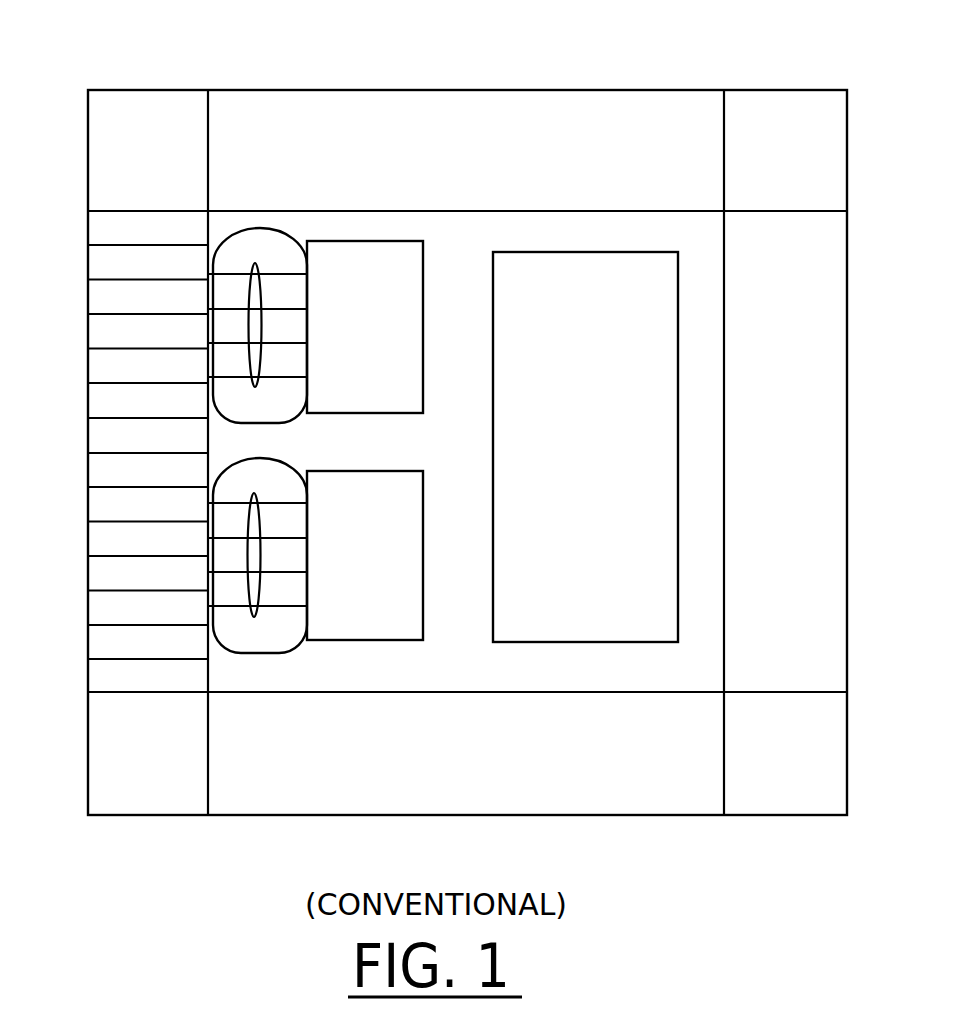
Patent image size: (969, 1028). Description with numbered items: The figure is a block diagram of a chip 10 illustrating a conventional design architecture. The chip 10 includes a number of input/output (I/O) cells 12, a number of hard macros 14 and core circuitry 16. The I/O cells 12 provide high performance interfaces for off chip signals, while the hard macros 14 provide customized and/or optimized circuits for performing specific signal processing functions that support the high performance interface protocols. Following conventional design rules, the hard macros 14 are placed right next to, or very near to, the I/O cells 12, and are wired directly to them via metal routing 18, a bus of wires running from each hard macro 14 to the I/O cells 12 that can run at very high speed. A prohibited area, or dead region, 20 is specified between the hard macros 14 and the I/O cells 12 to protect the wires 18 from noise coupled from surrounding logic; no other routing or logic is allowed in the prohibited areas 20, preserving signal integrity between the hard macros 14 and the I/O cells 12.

The chip 10 is at (107, 46).
The input/output (I/O) cells 12 is at (88, 228).
The hard macros 14 is at (377, 413).
The core circuitry 16 is at (608, 252).
The metal routing 18 is at (256, 387).
The prohibited area 20 is at (268, 458).